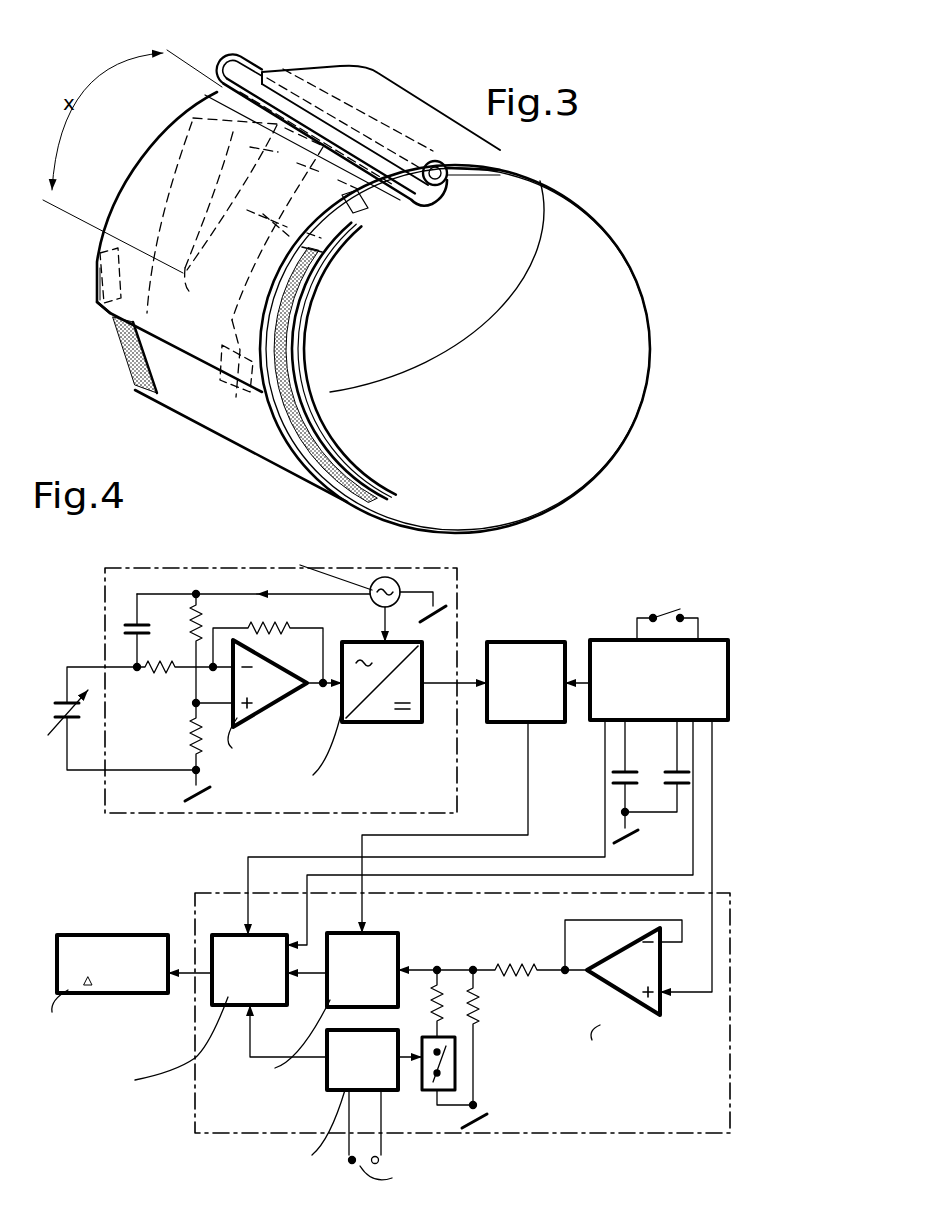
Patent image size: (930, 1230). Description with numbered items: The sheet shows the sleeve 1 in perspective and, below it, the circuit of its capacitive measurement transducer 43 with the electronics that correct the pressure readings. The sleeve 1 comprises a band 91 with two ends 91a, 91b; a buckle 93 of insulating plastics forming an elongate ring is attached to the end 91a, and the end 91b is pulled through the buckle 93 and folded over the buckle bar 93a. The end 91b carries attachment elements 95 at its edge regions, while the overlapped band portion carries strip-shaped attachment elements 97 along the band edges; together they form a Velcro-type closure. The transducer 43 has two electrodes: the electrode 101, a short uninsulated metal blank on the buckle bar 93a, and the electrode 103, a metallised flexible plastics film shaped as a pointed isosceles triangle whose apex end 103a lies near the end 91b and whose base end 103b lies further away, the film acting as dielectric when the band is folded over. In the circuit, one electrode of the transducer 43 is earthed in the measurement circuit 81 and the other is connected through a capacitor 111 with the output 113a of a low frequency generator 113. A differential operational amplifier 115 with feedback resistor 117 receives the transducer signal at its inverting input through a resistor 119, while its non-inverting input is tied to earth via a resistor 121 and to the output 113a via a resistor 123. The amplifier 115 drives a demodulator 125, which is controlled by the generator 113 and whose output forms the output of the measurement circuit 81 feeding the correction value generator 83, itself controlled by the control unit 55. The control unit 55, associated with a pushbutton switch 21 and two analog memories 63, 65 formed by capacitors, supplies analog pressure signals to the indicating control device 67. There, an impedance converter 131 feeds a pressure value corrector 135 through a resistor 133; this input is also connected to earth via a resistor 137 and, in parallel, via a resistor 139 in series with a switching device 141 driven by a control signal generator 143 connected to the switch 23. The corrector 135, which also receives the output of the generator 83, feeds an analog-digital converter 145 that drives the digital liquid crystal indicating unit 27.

In FIG. 3, the sleeve 1 is at (415, 80).
In FIG. 3, the band 91 is at (358, 70).
In FIG. 3, the band end 91a is at (448, 180).
In FIG. 3, the band end 91b is at (100, 306).
In FIG. 3, the buckle 93 is at (430, 205).
In FIG. 3, the buckle bar 93a is at (217, 64).
In FIG. 3, the attachment elements 95 is at (102, 252).
In FIG. 3, the strip-shaped attachment elements 97 is at (330, 250).
In FIG. 3, the electrode 101 is at (362, 212).
In FIG. 3, the electrode 103 is at (336, 260).
In FIG. 3, the electrode end 103a is at (181, 225).
In FIG. 3, the electrode end 103b is at (213, 388).
In FIG. 4, the measurement transducer 43 is at (57, 686).
In FIG. 4, the capacitor 111 is at (130, 614).
In FIG. 4, the low frequency generator 113 is at (375, 578).
In FIG. 4, the generator output 113a is at (300, 565).
In FIG. 4, the differential operational amplifier 115 is at (268, 712).
In FIG. 4, the resistor 117 is at (278, 622).
In FIG. 4, the resistor 119 is at (170, 672).
In FIG. 4, the resistor 121 is at (205, 745).
In FIG. 4, the resistor 123 is at (190, 612).
In FIG. 4, the demodulator 125 is at (385, 722).
In FIG. 4, the measurement circuit 81 is at (458, 584).
In FIG. 4, the correction value generator 83 is at (500, 642).
In FIG. 4, the control unit 55 is at (612, 640).
In FIG. 4, the pushbutton switch 21 is at (668, 612).
In FIG. 4, the analog memory 63 is at (618, 770).
In FIG. 4, the analog memory 65 is at (670, 770).
In FIG. 4, the indicating control device 67 is at (195, 1047).
In FIG. 4, the digital liquid crystal indicating unit 27 is at (118, 935).
In FIG. 4, the analog-digital converter 145 is at (228, 935).
In FIG. 4, the pressure value corrector 135 is at (400, 946).
In FIG. 4, the control signal generator 143 is at (345, 1080).
In FIG. 4, the pushbutton switch 23 is at (390, 1176).
In FIG. 4, the switching device 141 is at (455, 1057).
In FIG. 4, the resistor 139 is at (441, 995).
In FIG. 4, the resistor 137 is at (479, 1005).
In FIG. 4, the resistor 133 is at (518, 962).
In FIG. 4, the impedance converter 131 is at (635, 1000).